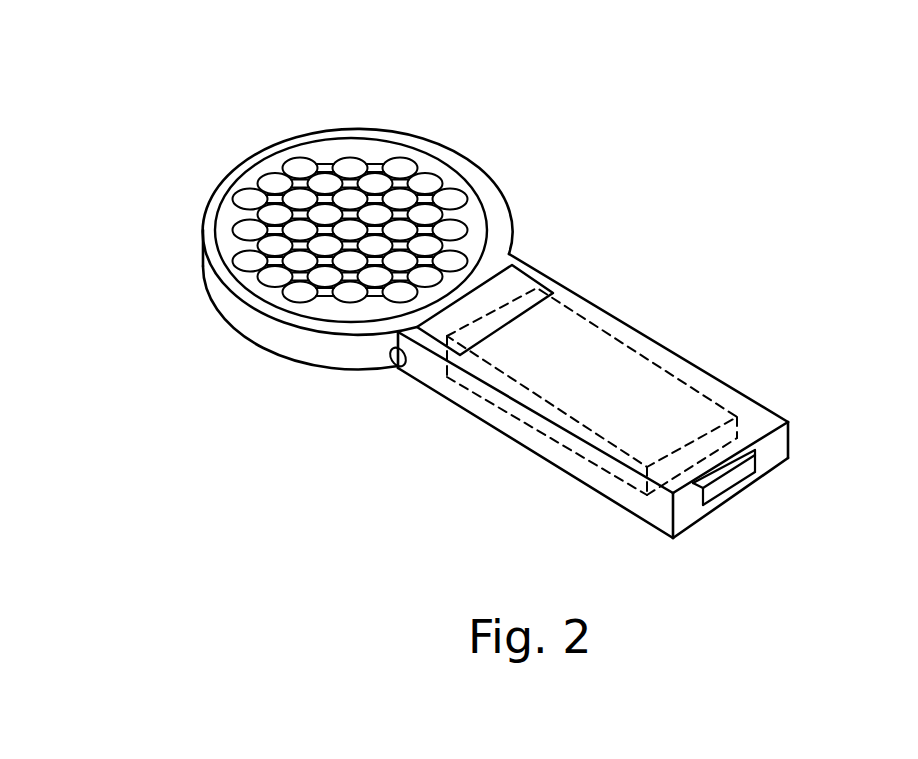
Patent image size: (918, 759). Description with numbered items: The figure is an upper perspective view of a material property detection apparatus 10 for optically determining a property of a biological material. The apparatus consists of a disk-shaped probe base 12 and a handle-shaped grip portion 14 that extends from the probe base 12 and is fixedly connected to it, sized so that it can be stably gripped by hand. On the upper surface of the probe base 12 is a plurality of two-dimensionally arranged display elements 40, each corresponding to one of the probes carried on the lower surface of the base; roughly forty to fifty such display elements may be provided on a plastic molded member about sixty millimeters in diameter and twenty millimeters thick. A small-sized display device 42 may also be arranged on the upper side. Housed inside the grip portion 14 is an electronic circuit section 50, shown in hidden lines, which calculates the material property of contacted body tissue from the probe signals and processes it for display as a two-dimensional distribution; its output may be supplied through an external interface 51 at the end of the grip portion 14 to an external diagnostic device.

The material property detection apparatus 10 is at (207, 127).
The probe base 12 is at (472, 177).
The grip portion 14 is at (675, 352).
The display elements 40 is at (247, 230).
The display device 42 is at (445, 335).
The electronic circuit section 50 is at (622, 426).
The external interface 51 is at (733, 477).